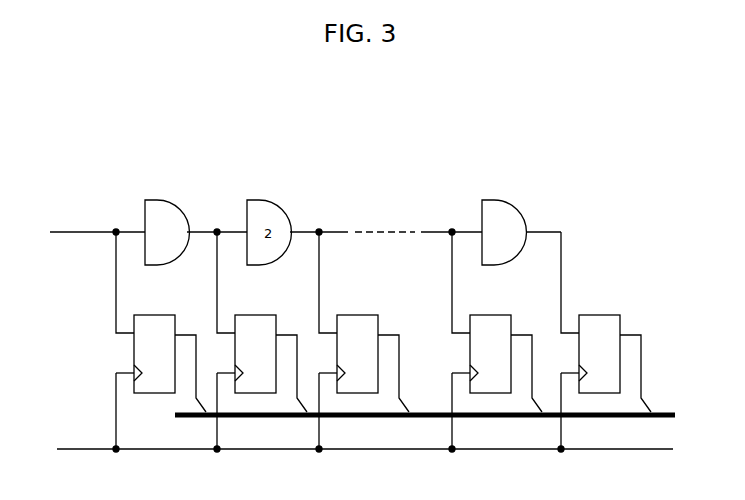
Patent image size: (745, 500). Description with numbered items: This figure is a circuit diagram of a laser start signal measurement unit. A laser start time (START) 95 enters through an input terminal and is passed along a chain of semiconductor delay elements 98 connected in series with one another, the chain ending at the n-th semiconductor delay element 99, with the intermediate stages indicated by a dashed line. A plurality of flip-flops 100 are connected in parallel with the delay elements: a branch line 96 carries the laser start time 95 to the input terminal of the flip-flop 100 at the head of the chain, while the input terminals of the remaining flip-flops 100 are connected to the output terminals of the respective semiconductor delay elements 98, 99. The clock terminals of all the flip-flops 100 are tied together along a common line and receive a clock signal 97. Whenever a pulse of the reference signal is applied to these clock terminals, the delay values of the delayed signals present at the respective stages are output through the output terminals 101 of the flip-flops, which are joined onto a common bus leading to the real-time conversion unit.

The laser start time (START) 95 is at (82, 232).
The branch wire / node line 96 is at (116, 283).
The clock signal 97 is at (82, 449).
The semiconductor delay element 98 is at (152, 200).
The n-th gate 99 is at (493, 203).
The flip-flop 100 is at (142, 353).
The output terminal 101 is at (672, 412).